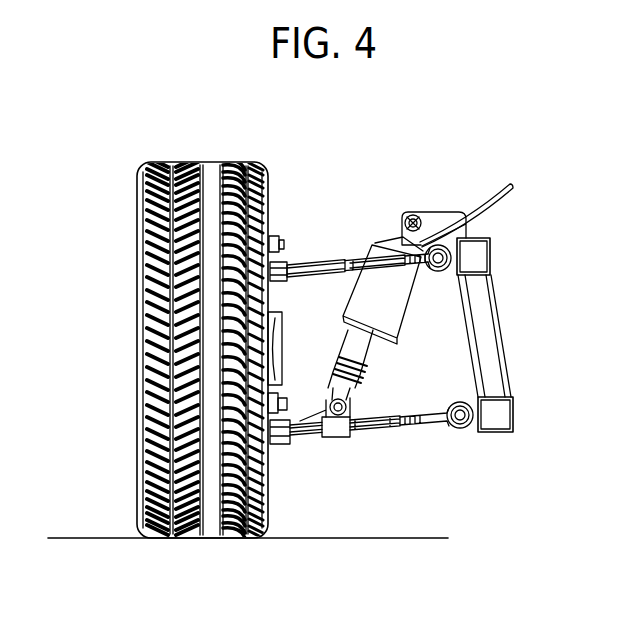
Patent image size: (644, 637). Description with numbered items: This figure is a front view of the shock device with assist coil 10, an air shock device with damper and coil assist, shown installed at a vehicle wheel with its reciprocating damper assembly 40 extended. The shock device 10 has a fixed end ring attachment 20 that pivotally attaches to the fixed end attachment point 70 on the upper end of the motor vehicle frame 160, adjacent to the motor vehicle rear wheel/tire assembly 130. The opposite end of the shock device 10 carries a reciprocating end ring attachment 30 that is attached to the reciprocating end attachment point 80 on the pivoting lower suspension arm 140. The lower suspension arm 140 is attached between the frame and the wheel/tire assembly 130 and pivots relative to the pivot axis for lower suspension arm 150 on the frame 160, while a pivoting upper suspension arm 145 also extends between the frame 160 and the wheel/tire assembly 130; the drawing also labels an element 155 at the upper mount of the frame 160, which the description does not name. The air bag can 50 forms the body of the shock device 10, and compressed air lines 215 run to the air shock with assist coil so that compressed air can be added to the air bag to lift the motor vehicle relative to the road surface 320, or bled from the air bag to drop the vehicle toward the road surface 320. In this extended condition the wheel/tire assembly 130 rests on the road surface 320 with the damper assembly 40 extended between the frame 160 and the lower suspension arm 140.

The shock device with assist coil 10 is at (440, 323).
The fixed end ring attachment 20 is at (401, 212).
The reciprocating end ring attachment 30 is at (293, 425).
The reciprocating damper assembly 40 is at (362, 353).
The air bag can 50 is at (410, 287).
The fixed end attachment point on motor vehicle 70 is at (417, 216).
The reciprocating end attachment point on lower suspension arm 80 is at (343, 430).
The motor vehicle rear wheel/tire assembly 130 is at (147, 228).
The pivoting lower suspension arm 140 is at (418, 432).
The pivoting upper suspension arm 145 is at (324, 266).
The pivot axis for lower suspension arm 150 is at (466, 422).
The upper frame mount 155 is at (443, 256).
The motor vehicle frame 160 is at (500, 370).
The compressed air lines to each air shock with assist coil 215 is at (512, 190).
The road surface 320 is at (364, 539).